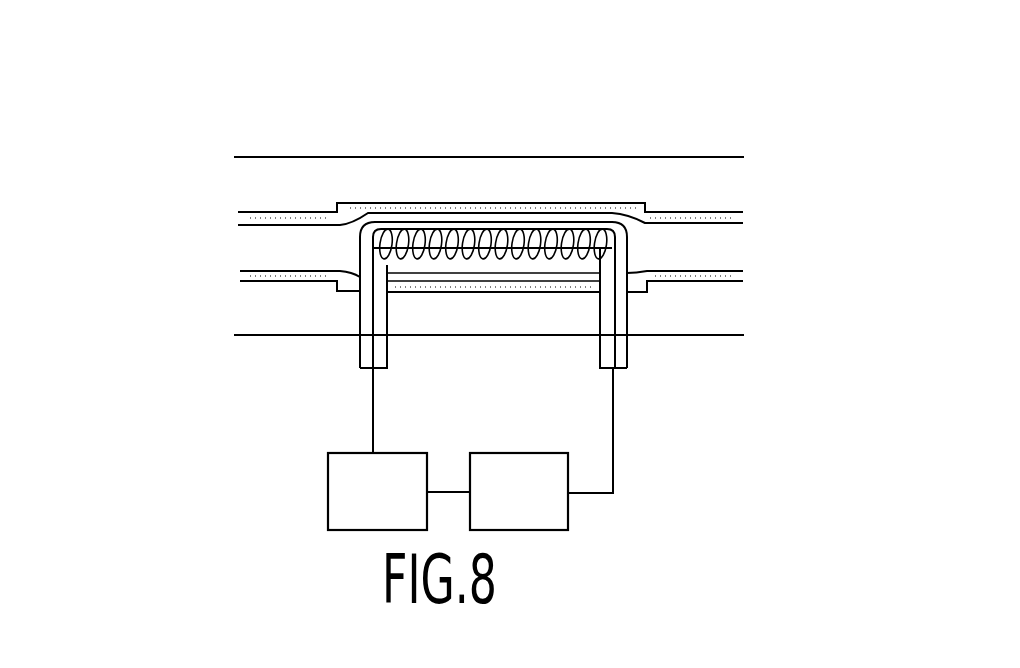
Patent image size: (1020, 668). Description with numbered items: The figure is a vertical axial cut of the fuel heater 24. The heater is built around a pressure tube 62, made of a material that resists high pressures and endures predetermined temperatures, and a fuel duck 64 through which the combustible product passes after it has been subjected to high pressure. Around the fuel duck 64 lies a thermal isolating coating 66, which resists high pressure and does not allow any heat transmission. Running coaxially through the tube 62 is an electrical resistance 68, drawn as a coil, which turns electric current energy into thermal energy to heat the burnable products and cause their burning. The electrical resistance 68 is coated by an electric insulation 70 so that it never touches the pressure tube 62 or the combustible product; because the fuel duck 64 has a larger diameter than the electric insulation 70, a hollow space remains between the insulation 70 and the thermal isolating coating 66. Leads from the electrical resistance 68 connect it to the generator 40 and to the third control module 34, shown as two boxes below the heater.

The fuel heater 24 is at (605, 112).
The pressure tube 62 is at (318, 177).
The fuel duck 64 is at (260, 248).
The thermal isolating coating 66 is at (738, 220).
The electrical resistance 68 is at (440, 236).
The electric insulation 70 is at (604, 221).
The generator 40 is at (377, 491).
The third control module 34 is at (519, 491).